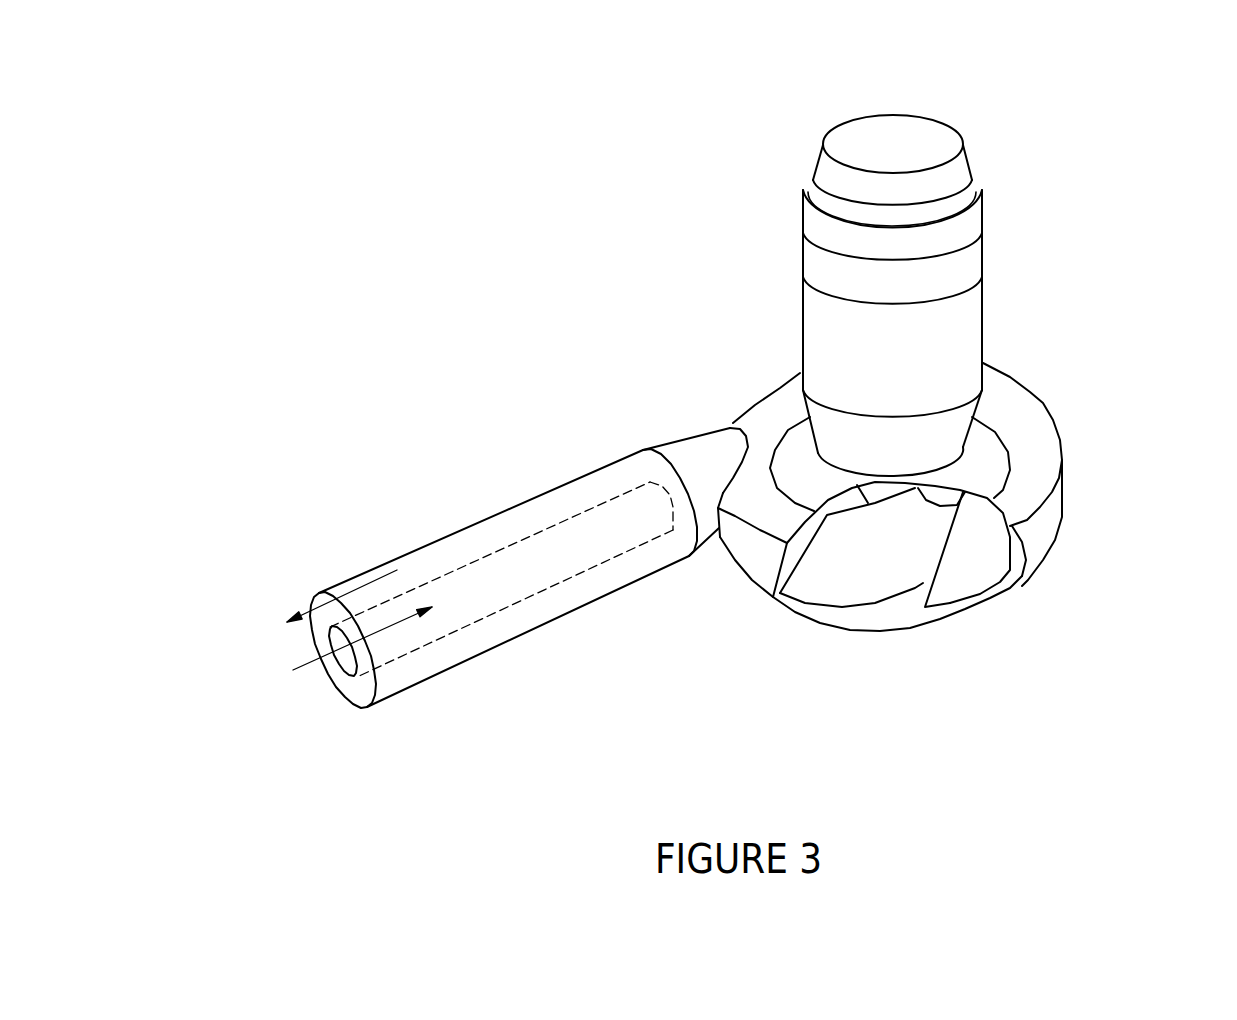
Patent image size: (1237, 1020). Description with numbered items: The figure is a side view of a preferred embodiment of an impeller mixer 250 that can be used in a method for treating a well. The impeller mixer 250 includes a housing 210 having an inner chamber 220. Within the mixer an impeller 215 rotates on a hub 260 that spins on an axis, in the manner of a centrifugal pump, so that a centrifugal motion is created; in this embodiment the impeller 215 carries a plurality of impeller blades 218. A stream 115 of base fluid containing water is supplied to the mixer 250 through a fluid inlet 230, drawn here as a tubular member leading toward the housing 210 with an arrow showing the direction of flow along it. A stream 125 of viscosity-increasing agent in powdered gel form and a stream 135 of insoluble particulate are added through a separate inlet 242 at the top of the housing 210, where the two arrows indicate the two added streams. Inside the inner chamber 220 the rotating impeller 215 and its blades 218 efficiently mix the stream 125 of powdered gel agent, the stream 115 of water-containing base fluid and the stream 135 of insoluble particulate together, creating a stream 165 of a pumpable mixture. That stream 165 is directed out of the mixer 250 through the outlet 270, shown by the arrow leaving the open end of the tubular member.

The stream of base fluid containing water 115 is at (330, 683).
The stream of viscosity-increasing agent in powdered gel form 125 is at (922, 137).
The stream of insoluble particulate 135 is at (867, 135).
The stream of pumpable mixture 165 is at (297, 589).
The housing 210 is at (983, 333).
The impeller 215 is at (801, 604).
The impeller blades 218 is at (845, 543).
The inner chamber 220 is at (1076, 591).
The fluid inlet 230 is at (501, 607).
The inlet 242 is at (920, 128).
The impeller mixer 250 is at (941, 497).
The hub 260 is at (900, 434).
The outlet 270 is at (472, 594).